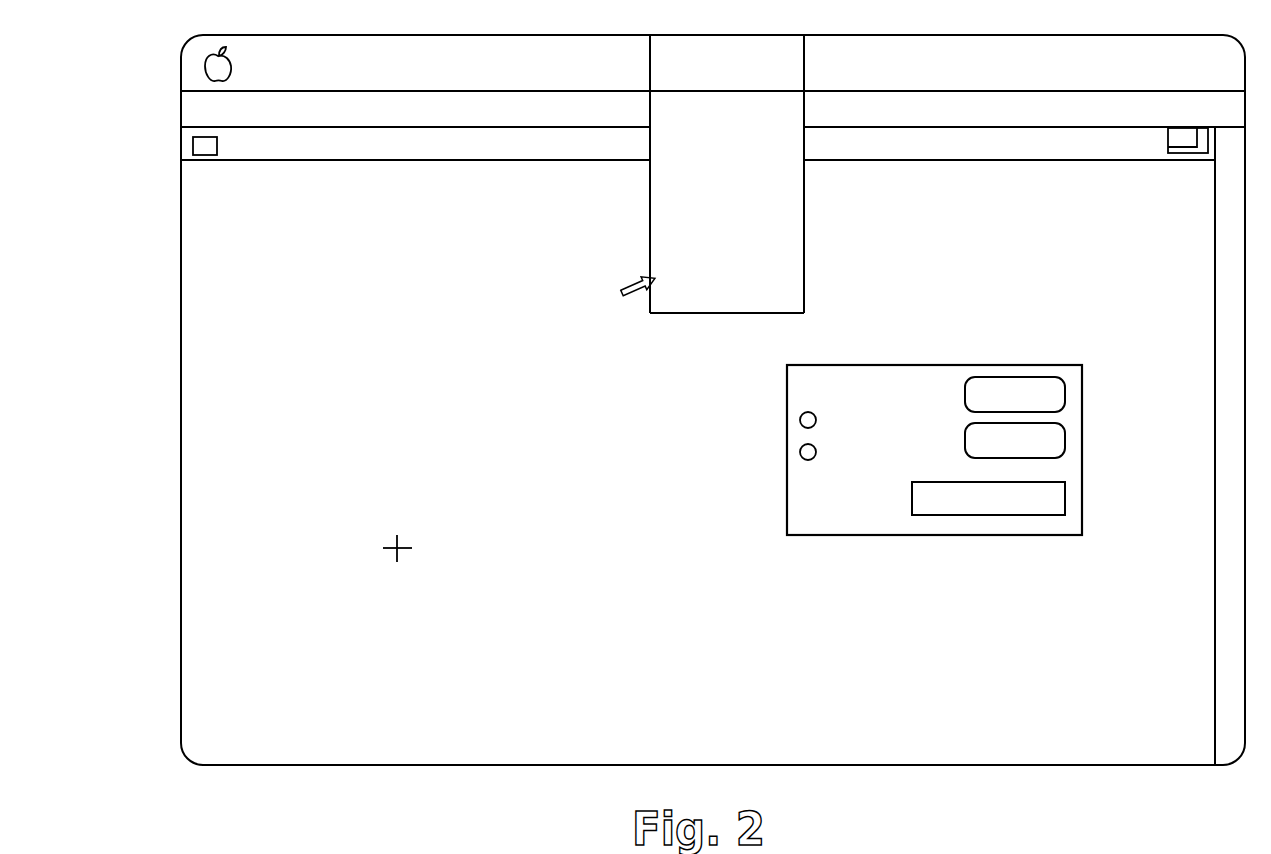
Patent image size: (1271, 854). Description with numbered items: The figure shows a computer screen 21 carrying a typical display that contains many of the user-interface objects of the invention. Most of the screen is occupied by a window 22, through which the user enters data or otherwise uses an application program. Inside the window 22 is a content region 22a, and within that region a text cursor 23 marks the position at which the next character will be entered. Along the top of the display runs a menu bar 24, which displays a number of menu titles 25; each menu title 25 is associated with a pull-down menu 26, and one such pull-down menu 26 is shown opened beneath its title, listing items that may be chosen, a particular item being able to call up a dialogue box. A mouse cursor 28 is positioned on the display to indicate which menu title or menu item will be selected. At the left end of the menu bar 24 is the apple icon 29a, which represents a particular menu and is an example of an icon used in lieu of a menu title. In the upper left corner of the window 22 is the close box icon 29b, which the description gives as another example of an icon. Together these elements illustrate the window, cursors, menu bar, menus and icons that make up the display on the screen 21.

The computer screen 21 is at (368, 773).
The window 22 is at (1125, 123).
The content region 22a is at (521, 690).
The text cursor 23 is at (390, 545).
The menu bar 24 is at (268, 63).
The menu title 25 is at (430, 50).
The pull-down menu 26 is at (805, 233).
The mouse cursor 28 is at (622, 283).
The apple icon 29a is at (203, 62).
The close box icon 29b is at (203, 155).